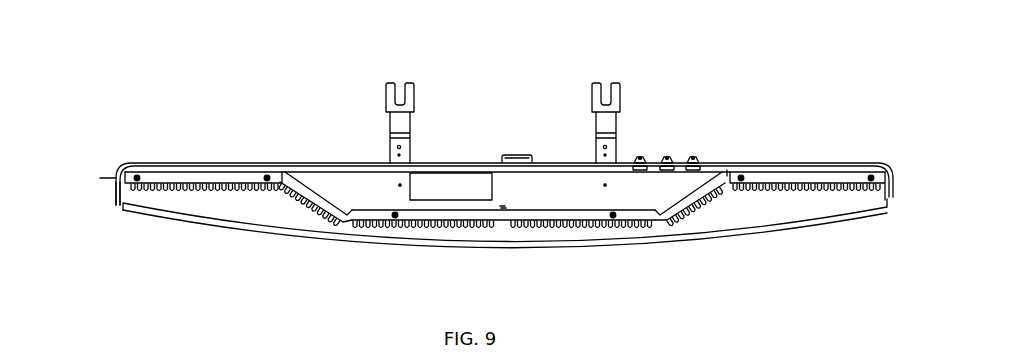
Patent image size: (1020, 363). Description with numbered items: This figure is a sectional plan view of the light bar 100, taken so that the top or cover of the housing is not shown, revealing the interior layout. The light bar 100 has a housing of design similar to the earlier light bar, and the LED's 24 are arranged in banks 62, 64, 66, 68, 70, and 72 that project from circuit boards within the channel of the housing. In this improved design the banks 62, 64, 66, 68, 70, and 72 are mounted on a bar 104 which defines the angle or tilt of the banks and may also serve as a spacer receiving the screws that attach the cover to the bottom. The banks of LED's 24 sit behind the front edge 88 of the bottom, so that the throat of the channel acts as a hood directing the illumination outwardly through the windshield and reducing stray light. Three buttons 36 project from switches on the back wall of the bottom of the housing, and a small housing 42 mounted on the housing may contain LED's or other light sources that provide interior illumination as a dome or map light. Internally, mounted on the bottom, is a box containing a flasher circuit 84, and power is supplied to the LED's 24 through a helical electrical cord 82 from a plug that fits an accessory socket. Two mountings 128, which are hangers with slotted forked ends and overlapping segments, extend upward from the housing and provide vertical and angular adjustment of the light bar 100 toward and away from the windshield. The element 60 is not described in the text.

The light bar 100 is at (246, 163).
The bar 104 is at (783, 177).
The mountings 128 is at (388, 103).
The flasher circuit 84 is at (457, 182).
The small housing 42 is at (522, 155).
The buttons 36 is at (693, 157).
The helical electrical cord 82 is at (117, 185).
The bank 62 is at (218, 190).
The bank 64 is at (320, 213).
The bank 66 is at (440, 223).
The bank 68 is at (608, 222).
The LED's 24 is at (518, 223).
The bank 70 is at (700, 205).
The bank 72 is at (820, 190).
The front edge 88 is at (260, 223).
The housing 60 is at (840, 213).